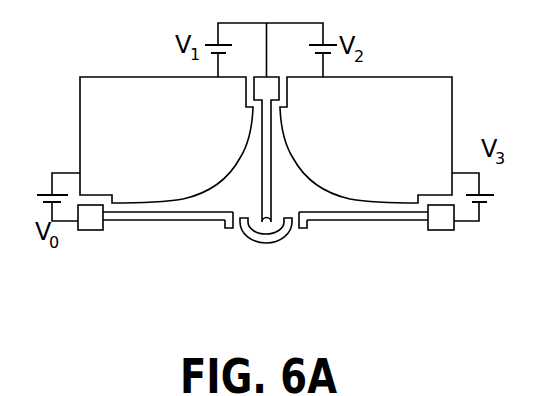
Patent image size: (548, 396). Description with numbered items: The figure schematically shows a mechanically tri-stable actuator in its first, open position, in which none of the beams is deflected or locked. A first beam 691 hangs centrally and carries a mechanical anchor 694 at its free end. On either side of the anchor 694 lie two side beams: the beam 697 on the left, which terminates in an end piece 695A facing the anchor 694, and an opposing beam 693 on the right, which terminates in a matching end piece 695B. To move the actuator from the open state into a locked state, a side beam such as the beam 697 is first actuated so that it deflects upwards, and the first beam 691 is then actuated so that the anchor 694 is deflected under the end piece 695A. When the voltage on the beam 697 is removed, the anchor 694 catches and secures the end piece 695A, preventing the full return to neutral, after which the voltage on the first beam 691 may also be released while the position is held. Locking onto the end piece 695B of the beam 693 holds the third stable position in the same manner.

The first beam 691 is at (271, 161).
The right electrode 693 is at (360, 221).
The mechanical anchor 694 is at (265, 243).
The end piece 695A is at (228, 229).
The end piece 695B is at (304, 229).
The beam 697 is at (155, 222).